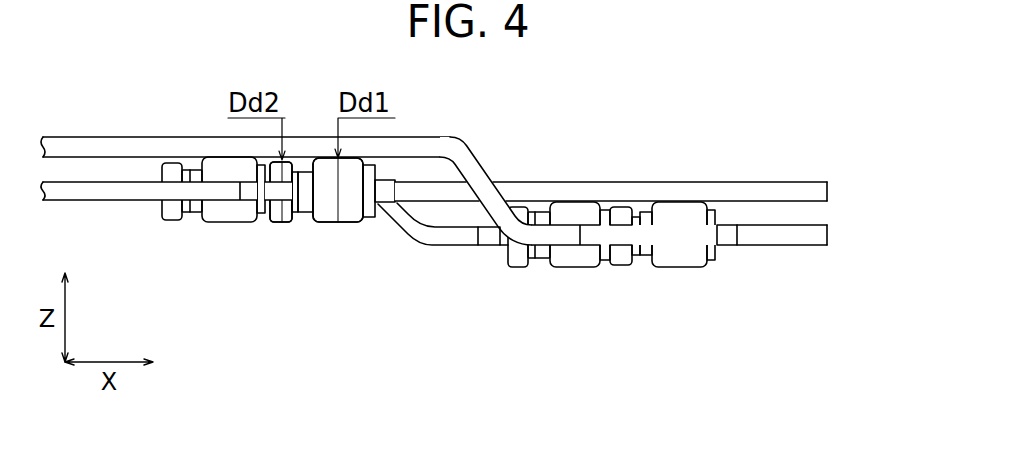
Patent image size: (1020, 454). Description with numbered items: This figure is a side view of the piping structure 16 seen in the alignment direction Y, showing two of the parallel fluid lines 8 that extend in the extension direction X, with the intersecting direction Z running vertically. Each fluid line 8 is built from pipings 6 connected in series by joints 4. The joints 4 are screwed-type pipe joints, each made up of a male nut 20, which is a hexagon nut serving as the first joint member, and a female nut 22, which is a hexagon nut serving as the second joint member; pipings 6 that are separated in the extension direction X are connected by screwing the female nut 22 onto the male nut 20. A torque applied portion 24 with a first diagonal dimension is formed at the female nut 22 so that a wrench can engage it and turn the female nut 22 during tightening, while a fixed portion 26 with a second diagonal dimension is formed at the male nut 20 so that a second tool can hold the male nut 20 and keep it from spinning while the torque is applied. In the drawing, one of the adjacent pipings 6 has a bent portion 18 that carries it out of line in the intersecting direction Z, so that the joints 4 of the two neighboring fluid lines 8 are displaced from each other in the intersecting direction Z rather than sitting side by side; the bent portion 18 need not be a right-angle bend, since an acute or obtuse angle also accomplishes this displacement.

The joint 4 is at (578, 280).
The piping 6 is at (464, 256).
The fluid line 8 is at (834, 199).
The piping structure 16 is at (653, 162).
The bent portion 18 is at (489, 183).
The male nut 20 is at (285, 231).
The female nut 22 is at (341, 231).
The torque applied portion 24 is at (335, 250).
The fixed portion 26 is at (262, 252).